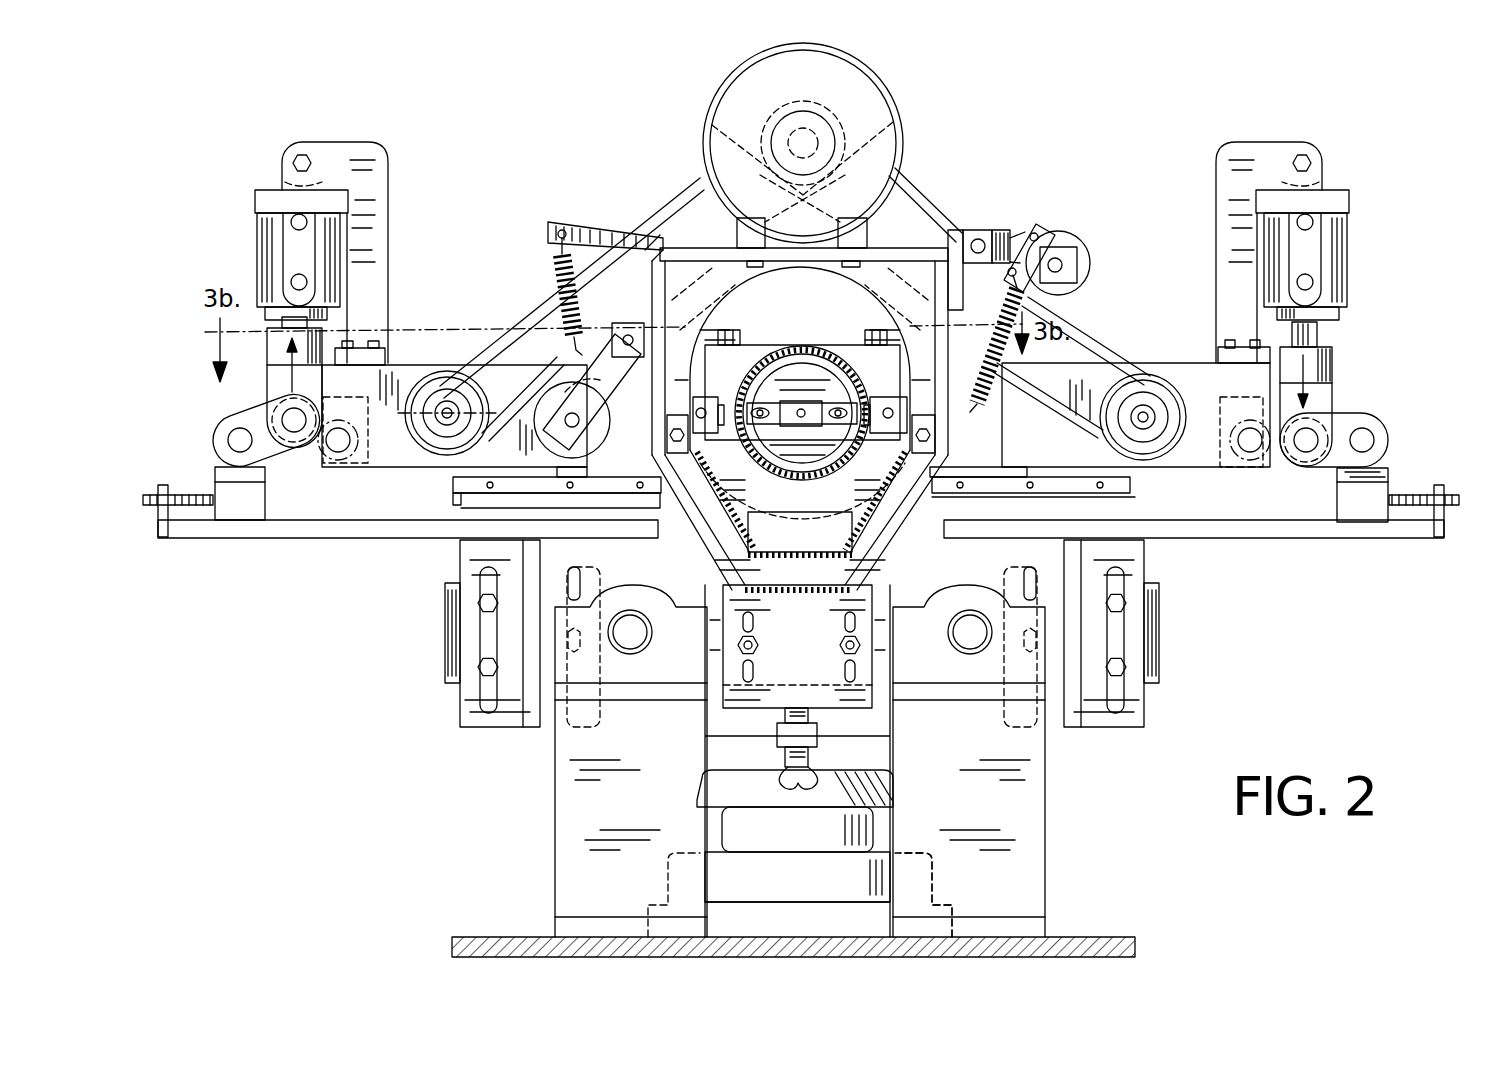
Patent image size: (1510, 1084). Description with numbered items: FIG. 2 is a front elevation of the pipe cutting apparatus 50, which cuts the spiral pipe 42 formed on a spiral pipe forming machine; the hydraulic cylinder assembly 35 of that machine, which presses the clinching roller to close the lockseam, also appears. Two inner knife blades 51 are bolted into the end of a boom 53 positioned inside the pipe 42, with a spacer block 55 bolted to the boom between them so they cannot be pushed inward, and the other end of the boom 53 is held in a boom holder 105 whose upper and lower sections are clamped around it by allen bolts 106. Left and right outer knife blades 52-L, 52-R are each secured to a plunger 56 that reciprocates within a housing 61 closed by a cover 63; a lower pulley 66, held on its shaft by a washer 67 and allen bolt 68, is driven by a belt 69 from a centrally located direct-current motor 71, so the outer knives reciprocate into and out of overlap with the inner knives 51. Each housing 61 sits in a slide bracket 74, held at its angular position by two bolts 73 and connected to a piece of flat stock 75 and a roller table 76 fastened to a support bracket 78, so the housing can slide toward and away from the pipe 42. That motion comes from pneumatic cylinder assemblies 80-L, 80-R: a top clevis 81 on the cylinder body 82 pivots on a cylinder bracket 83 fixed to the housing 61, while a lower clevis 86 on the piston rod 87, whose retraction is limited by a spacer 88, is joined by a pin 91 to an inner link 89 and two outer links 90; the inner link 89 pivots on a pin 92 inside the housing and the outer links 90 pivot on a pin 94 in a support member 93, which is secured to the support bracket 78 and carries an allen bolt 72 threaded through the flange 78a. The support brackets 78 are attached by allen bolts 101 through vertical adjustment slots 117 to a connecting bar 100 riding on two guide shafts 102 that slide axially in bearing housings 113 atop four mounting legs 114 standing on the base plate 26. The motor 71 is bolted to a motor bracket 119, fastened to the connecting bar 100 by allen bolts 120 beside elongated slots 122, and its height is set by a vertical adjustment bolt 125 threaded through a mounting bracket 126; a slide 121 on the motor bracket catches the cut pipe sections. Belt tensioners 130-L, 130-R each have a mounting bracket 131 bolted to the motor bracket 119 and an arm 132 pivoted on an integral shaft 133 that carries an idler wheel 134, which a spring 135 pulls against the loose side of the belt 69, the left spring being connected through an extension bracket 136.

The base plate 26 is at (478, 935).
The hydraulic cylinder assembly 35 is at (866, 752).
The spiral pipe 42 is at (825, 352).
The pipe cutting apparatus 50 is at (992, 172).
The inner knife blade 51 is at (828, 403).
The left outer knife blade 52-L is at (732, 458).
The right outer knife blade 52-R is at (860, 455).
The boom 53 is at (800, 366).
The spacer block 55 is at (795, 403).
The plunger 56 is at (700, 397).
The housing 61 is at (392, 454).
The cover 63 is at (416, 363).
The lower pulley 66 is at (470, 380).
The washer 67 is at (470, 405).
The allen bolt 68 is at (447, 400).
The belt 69 is at (670, 214).
The DC motor 71 is at (818, 80).
The allen bolt 72 is at (172, 507).
The bolts 73 is at (1000, 360).
The slide bracket 74 is at (632, 467).
The flat stock 75 is at (453, 485).
The roller table 76 is at (453, 499).
The support bracket 78 is at (235, 540).
The flange 78a is at (162, 540).
The left pneumatic cylinder assembly 80-L is at (233, 261).
The right pneumatic cylinder assembly 80-R is at (1364, 243).
The top clevis 81 is at (283, 170).
The cylinder body 82 is at (340, 252).
The cylinder bracket 83 is at (390, 150).
The lower clevis 86 is at (267, 400).
The piston rod 87 is at (1320, 336).
The spacer 88 is at (265, 350).
The inner link 89 is at (1280, 462).
The outer links 90 is at (232, 417).
The pin 91 is at (293, 450).
The pin 92 is at (338, 453).
The support member 93 is at (262, 510).
The pin 94 is at (238, 442).
The connecting bar 100 is at (458, 612).
The allen bolts 101 is at (476, 667).
The guide shafts 102 is at (630, 640).
The boom holder 105 is at (755, 373).
The allen bolts 106 is at (708, 330).
The bearing housings 113 is at (652, 662).
The mounting legs 114 is at (556, 858).
The vertical adjustment slots 117 is at (470, 578).
The motor bracket 119 is at (806, 620).
The allen bolts 120 is at (754, 648).
The slide 121 is at (872, 533).
The slot 122 is at (754, 676).
The vertical adjustment bolt 125 is at (803, 790).
The mounting bracket 126 is at (882, 778).
The left belt tensioner assembly 130-L is at (541, 215).
The right belt tensioner assembly 130-R is at (1068, 226).
The mounting bracket 131 is at (966, 233).
The arm 132 is at (605, 405).
The integral shaft 133 is at (628, 334).
The idler wheel 134 is at (557, 392).
The spring 135 is at (552, 262).
The extension bracket 136 is at (588, 226).